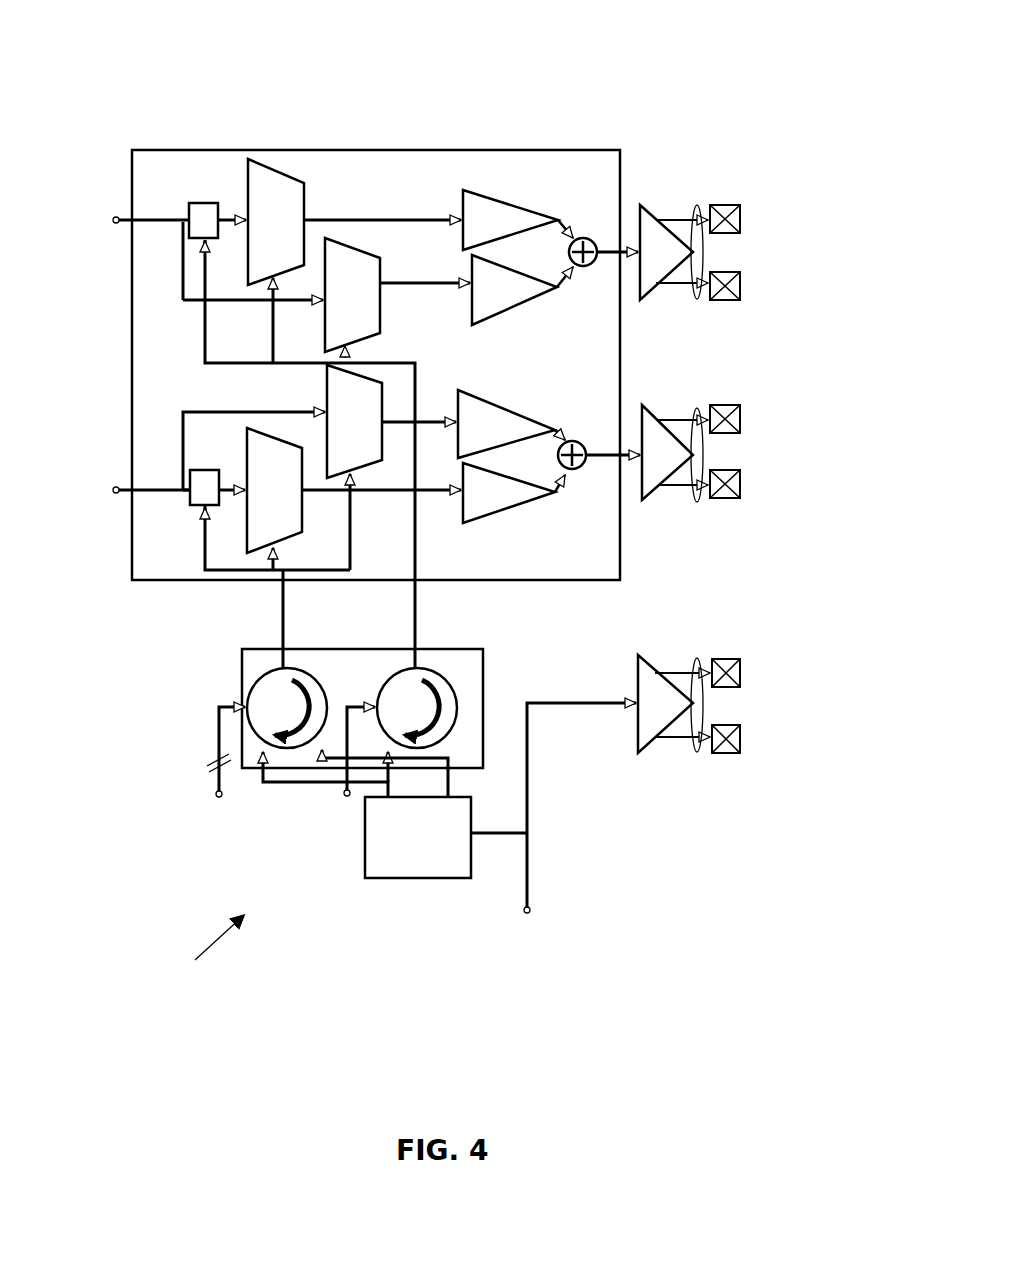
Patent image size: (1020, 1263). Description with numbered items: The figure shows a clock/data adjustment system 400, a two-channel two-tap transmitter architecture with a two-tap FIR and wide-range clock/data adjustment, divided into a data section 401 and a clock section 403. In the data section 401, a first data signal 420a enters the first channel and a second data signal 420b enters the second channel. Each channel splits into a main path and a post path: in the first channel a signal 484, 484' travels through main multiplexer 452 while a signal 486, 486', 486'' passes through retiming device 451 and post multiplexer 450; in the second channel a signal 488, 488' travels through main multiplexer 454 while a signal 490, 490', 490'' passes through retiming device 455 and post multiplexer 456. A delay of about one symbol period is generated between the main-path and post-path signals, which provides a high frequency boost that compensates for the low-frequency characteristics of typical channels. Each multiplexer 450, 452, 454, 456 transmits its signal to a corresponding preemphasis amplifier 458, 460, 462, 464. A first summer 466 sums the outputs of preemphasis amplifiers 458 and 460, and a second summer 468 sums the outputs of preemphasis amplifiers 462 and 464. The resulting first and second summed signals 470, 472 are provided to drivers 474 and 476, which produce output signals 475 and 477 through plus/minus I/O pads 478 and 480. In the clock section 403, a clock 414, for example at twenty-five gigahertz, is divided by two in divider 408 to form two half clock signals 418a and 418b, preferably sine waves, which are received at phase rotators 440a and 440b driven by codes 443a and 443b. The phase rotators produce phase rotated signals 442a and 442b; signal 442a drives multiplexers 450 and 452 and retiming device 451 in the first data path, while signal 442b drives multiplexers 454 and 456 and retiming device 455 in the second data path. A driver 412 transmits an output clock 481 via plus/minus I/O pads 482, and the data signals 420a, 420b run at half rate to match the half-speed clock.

The clock/data adjustment system 400 is at (803, 31).
The data section 401 is at (285, 150).
The clock section 403 is at (199, 948).
The divider 408 is at (408, 880).
The driver 412 is at (652, 662).
The clock 414 is at (530, 865).
The half clock signal 418a is at (443, 757).
The half clock signal 418b is at (280, 788).
The data signal 420a is at (127, 220).
The data signal 420b is at (128, 490).
The phase rotator 440a is at (440, 678).
The phase rotator 440b is at (300, 668).
The phase rotated signal 442a is at (418, 596).
The phase rotated signal 442b is at (282, 608).
The code 443a is at (347, 775).
The code 443b is at (217, 727).
The multiplexer 450 is at (306, 198).
The retiming device 451 is at (214, 203).
The multiplexer 452 is at (370, 255).
The multiplexer 454 is at (325, 378).
The retiming device 455 is at (208, 468).
The multiplexer 456 is at (295, 535).
The preemphasis amplifier 458 is at (492, 198).
The preemphasis amplifier 460 is at (510, 320).
The preemphasis amplifier 462 is at (492, 392).
The preemphasis amplifier 464 is at (495, 518).
The first summer 466 is at (588, 238).
The second summer 468 is at (582, 465).
The first summed signal 470 is at (612, 260).
The second summed signal 472 is at (600, 452).
The driver 474 is at (655, 212).
The output signal 475 is at (697, 300).
The driver 476 is at (655, 410).
The output signal 477 is at (697, 503).
The I/O pads 478 is at (740, 300).
The I/O pads 480 is at (740, 500).
The output clock 481 is at (697, 753).
The I/O pads 482 is at (745, 753).
The signal 484 is at (231, 290).
The signal 484' is at (425, 310).
The signal 486 is at (154, 205).
The signal 486' is at (224, 157).
The signal 486'' is at (389, 167).
The signal 488 is at (244, 430).
The signal 488' is at (435, 390).
The signal 490 is at (166, 519).
The signal 490' is at (228, 517).
The signal 490'' is at (381, 517).